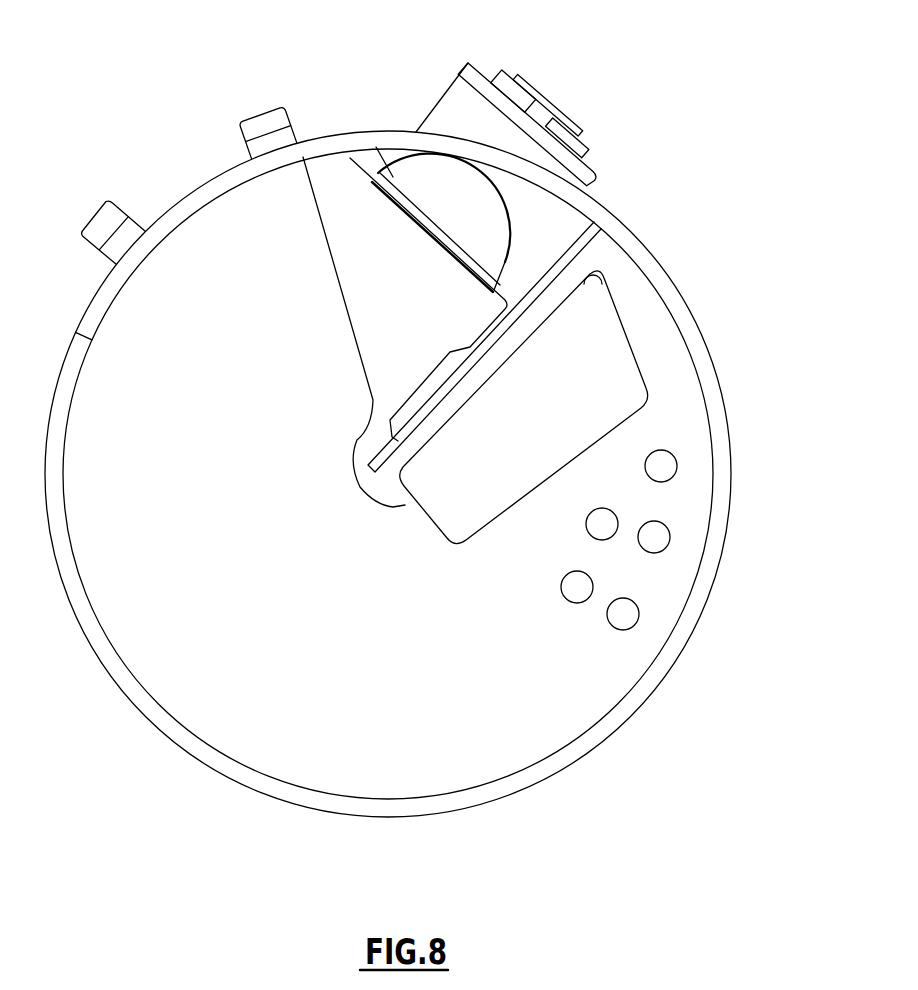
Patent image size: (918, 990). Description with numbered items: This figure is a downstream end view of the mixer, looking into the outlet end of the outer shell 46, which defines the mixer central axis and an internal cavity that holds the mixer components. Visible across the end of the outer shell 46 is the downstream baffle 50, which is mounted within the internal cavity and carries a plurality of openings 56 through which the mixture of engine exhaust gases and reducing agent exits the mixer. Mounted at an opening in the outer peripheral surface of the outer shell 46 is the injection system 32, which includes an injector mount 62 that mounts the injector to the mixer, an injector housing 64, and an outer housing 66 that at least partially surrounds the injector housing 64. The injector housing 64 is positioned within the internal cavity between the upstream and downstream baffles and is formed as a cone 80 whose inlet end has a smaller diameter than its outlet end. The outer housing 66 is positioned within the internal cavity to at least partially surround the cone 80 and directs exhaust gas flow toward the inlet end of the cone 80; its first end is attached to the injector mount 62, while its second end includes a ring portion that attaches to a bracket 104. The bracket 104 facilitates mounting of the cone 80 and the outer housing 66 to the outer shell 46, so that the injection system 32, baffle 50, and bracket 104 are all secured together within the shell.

The injection system 32 is at (539, 102).
The outer shell 46 is at (665, 668).
The downstream baffle 50 is at (290, 690).
The openings 56 is at (600, 383).
The injector mount 62 is at (490, 82).
The injector housing 64 is at (382, 168).
The outer housing 66 is at (440, 98).
The cone 80 is at (468, 198).
The bracket 104 is at (567, 252).